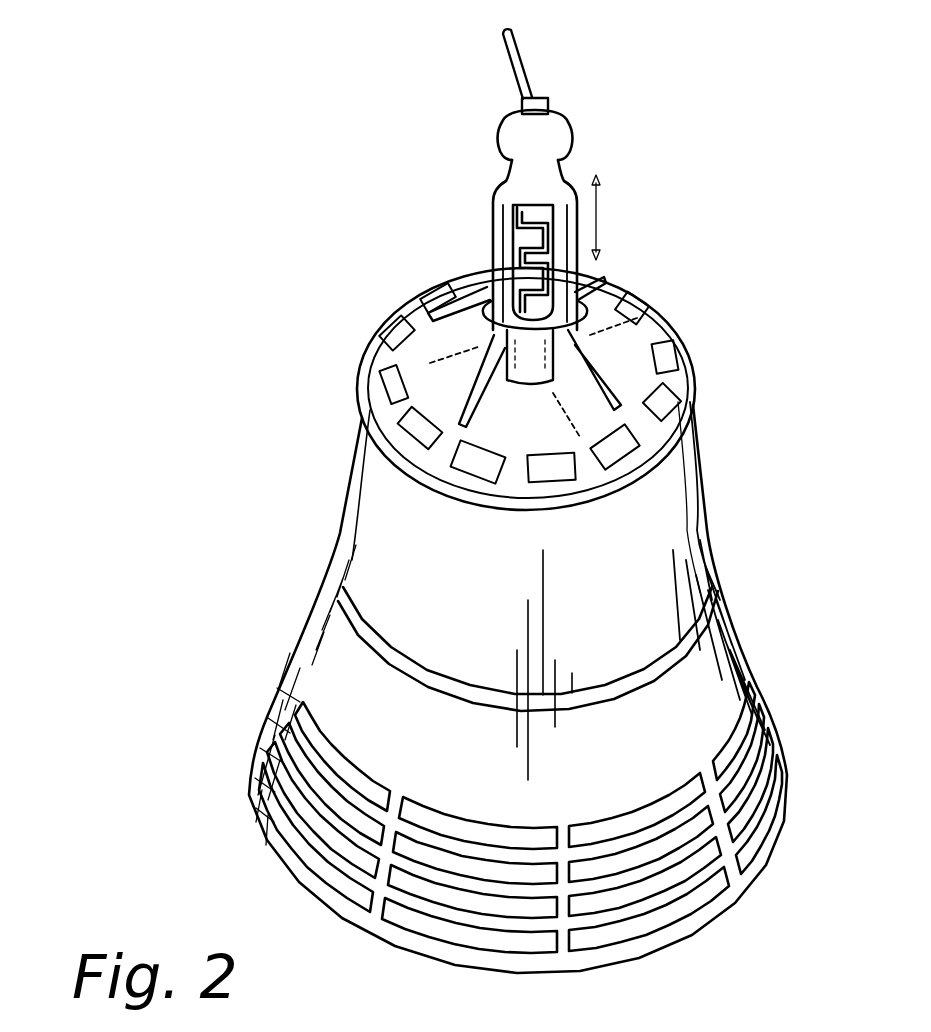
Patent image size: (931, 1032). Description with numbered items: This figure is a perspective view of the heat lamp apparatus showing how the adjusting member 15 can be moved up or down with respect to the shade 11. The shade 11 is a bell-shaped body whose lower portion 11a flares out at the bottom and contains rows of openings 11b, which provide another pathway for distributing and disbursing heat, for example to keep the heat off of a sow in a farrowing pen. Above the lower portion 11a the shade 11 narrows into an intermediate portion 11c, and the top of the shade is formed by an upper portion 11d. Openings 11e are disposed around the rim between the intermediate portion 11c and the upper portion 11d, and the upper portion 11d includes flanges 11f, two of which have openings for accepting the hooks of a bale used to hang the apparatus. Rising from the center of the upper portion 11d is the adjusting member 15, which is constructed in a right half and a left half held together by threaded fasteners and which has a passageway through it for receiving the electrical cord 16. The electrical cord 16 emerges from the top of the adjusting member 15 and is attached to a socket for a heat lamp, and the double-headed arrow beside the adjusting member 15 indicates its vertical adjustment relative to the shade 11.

The electrical cord 16 is at (518, 47).
The adjusting member 15 is at (563, 187).
The shade 11 is at (713, 447).
The lower portion 11a is at (737, 625).
The openings 11b is at (780, 748).
The intermediate portion 11c is at (702, 492).
The upper portion 11d is at (580, 282).
The openings 11e is at (673, 340).
The flanges 11f is at (478, 292).